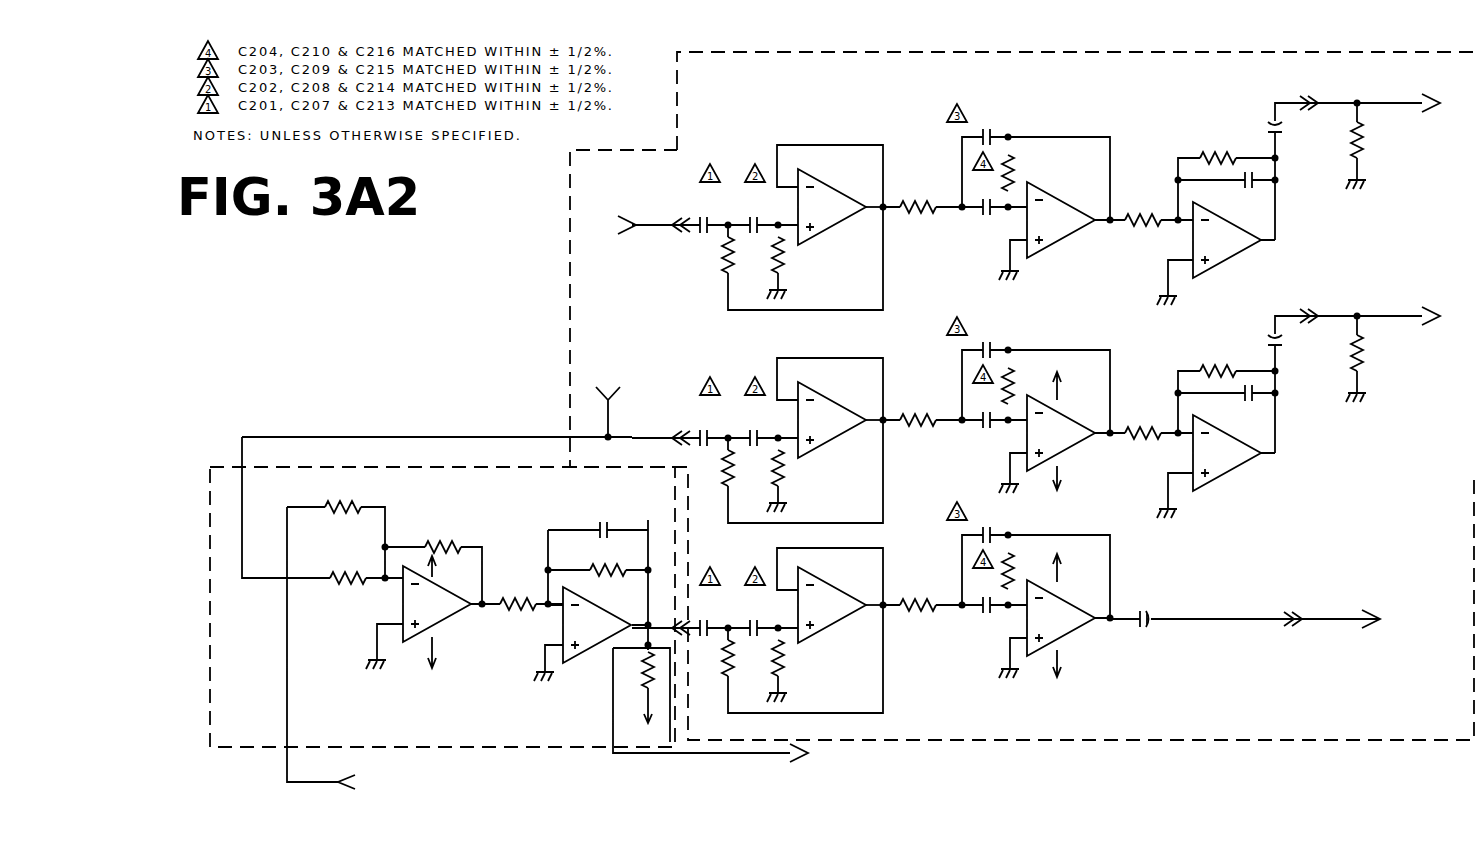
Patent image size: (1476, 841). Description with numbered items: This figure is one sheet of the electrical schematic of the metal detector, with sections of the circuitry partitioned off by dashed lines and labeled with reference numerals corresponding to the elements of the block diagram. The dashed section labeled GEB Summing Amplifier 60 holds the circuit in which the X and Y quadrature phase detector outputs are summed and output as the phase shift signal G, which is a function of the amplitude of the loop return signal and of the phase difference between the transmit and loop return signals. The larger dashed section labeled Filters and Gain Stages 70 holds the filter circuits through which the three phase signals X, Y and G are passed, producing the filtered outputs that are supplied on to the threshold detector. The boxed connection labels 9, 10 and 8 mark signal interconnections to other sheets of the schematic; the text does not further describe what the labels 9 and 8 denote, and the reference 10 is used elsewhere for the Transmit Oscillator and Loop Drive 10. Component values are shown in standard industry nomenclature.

The Filters and Gain Stages 70 is at (566, 289).
The GEB Summing Amplifier 60 is at (478, 467).
The signal reference 9 is at (824, 138).
The Transmit Oscillator and Loop Drive 10 is at (814, 351).
The signal reference 8 is at (603, 517).